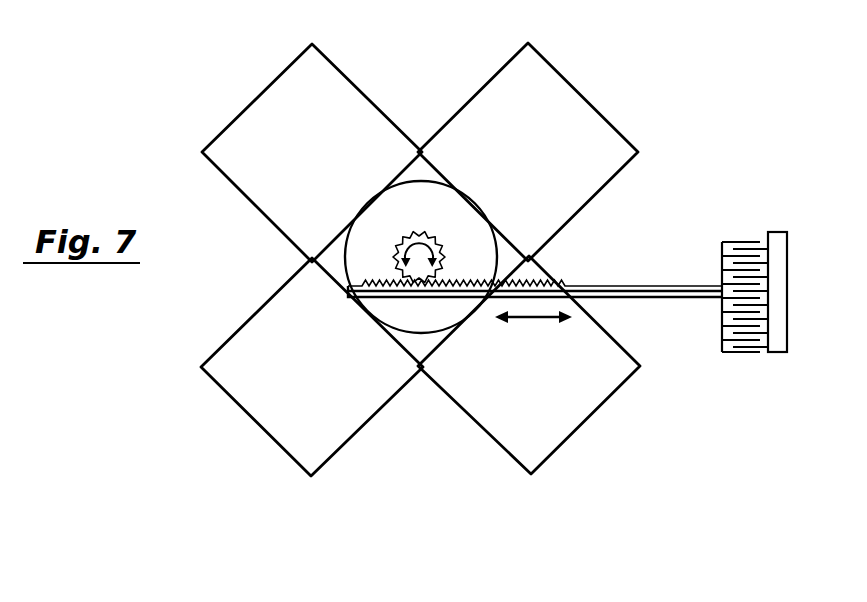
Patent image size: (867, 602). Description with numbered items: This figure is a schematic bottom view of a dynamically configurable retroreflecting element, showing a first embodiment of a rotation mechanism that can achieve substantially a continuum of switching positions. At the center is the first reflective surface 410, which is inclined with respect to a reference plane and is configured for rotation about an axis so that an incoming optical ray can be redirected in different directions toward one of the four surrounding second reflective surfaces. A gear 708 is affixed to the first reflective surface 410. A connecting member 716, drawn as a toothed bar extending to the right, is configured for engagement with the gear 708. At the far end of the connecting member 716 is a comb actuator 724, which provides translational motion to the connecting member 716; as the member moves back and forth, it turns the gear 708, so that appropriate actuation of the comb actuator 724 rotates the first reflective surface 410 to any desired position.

The first reflective surface 410 is at (472, 200).
The gear 708 is at (444, 248).
The connecting member 716 is at (543, 282).
The comb actuator 724 is at (742, 242).